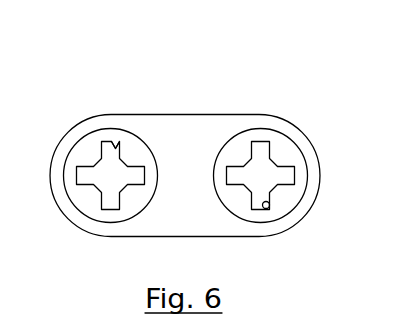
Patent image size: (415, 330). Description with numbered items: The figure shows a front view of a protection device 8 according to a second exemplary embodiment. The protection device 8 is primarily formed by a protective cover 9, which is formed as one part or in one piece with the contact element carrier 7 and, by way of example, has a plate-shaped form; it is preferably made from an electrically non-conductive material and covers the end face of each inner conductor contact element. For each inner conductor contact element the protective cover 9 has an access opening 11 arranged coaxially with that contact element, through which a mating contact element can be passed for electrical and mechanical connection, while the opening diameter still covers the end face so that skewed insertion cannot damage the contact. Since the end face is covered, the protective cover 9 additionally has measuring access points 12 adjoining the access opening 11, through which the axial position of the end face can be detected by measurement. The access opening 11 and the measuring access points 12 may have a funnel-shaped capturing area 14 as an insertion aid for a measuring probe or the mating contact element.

The contact element carrier 7 is at (185, 139).
The protection device 8 is at (196, 110).
The protective cover 9 is at (192, 224).
The access opening 11 is at (95, 167).
The measuring access point 12 is at (116, 148).
The funnel-shaped capturing area 14 is at (287, 150).